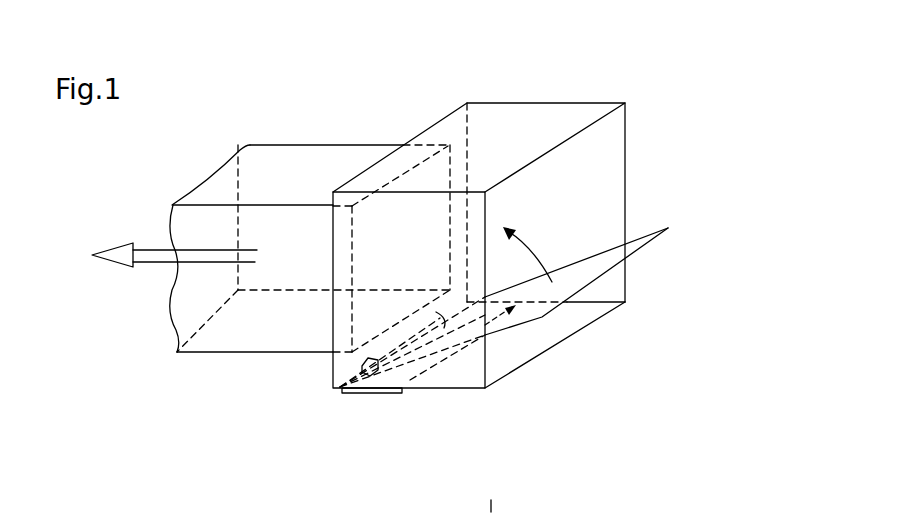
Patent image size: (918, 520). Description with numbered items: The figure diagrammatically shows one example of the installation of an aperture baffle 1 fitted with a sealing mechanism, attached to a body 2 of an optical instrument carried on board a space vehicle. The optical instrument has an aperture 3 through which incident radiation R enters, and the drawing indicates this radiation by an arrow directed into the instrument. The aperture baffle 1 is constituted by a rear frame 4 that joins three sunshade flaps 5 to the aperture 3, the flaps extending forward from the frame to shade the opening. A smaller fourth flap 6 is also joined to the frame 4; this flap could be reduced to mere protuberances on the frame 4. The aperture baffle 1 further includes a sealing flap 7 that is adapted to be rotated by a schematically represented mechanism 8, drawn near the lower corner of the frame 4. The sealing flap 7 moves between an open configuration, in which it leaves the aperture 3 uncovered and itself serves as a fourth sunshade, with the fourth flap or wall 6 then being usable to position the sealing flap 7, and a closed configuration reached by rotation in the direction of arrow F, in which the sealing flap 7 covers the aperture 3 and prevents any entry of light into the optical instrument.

The aperture baffle 1 is at (633, 46).
The body 2 is at (307, 145).
The aperture 3 is at (353, 225).
The rear frame 4 is at (442, 137).
The sunshade flaps 5 is at (625, 147).
The fourth flap 6 is at (428, 372).
The sealing flap 7 is at (645, 250).
The mechanism 8 is at (340, 387).
The incident radiation R is at (162, 262).
The direction of arrow F is at (532, 250).